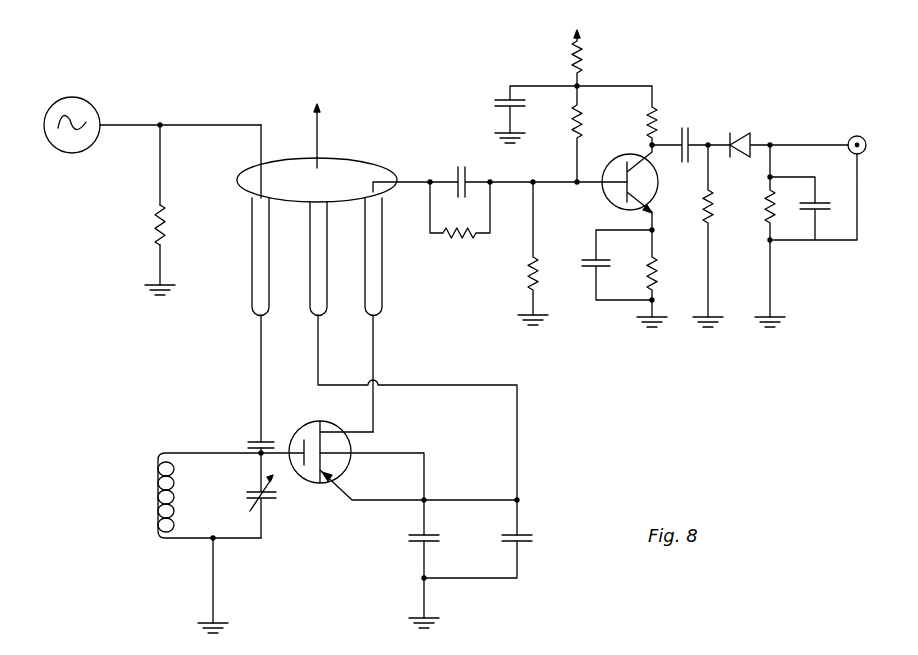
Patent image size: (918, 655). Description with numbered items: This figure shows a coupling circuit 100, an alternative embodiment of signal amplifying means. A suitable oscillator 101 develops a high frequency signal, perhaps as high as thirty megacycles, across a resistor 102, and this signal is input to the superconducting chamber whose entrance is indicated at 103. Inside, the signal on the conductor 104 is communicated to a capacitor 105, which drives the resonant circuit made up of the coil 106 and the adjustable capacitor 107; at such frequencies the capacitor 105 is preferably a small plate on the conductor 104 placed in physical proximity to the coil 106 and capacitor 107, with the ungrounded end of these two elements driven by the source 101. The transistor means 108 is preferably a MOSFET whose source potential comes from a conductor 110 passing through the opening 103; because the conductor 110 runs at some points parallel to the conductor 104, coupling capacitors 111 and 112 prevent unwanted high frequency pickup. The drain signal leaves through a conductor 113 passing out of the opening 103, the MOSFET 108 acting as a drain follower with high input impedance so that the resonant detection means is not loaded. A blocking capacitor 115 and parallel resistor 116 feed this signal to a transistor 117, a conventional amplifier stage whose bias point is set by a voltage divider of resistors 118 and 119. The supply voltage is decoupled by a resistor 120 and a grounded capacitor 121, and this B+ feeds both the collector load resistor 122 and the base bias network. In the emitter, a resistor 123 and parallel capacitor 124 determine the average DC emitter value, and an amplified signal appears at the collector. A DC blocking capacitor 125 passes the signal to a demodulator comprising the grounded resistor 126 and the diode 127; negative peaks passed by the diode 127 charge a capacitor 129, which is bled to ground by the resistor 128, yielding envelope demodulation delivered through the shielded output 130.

The coupling circuit 100 is at (158, 320).
The oscillator 101 is at (92, 107).
The resistor 102 is at (155, 218).
The superconducting chamber entrance 103 is at (372, 150).
The conductor 104 is at (258, 382).
The capacitor 105 is at (252, 438).
The coil 106 is at (156, 497).
The adjustable capacitor 107 is at (270, 500).
The transistor means 108 is at (304, 426).
The conductor 110 is at (519, 404).
The coupling capacitor 111 is at (526, 530).
The coupling capacitor 112 is at (414, 546).
The conductor 113 is at (376, 355).
The blocking capacitor 115 is at (455, 175).
The parallel resistor 116 is at (462, 238).
The transistor 117 is at (605, 200).
The resistor 118 is at (527, 276).
The resistor 119 is at (570, 125).
The resistor 120 is at (586, 58).
The capacitor 121 is at (500, 96).
The collector load resistor 122 is at (660, 113).
The resistor 123 is at (660, 268).
The capacitor 124 is at (588, 268).
The DC blocking capacitor 125 is at (690, 132).
The grounded resistor 126 is at (700, 212).
The diode 127 is at (748, 134).
The resistor 128 is at (762, 212).
The capacitor 129 is at (826, 214).
The shielded output 130 is at (852, 136).